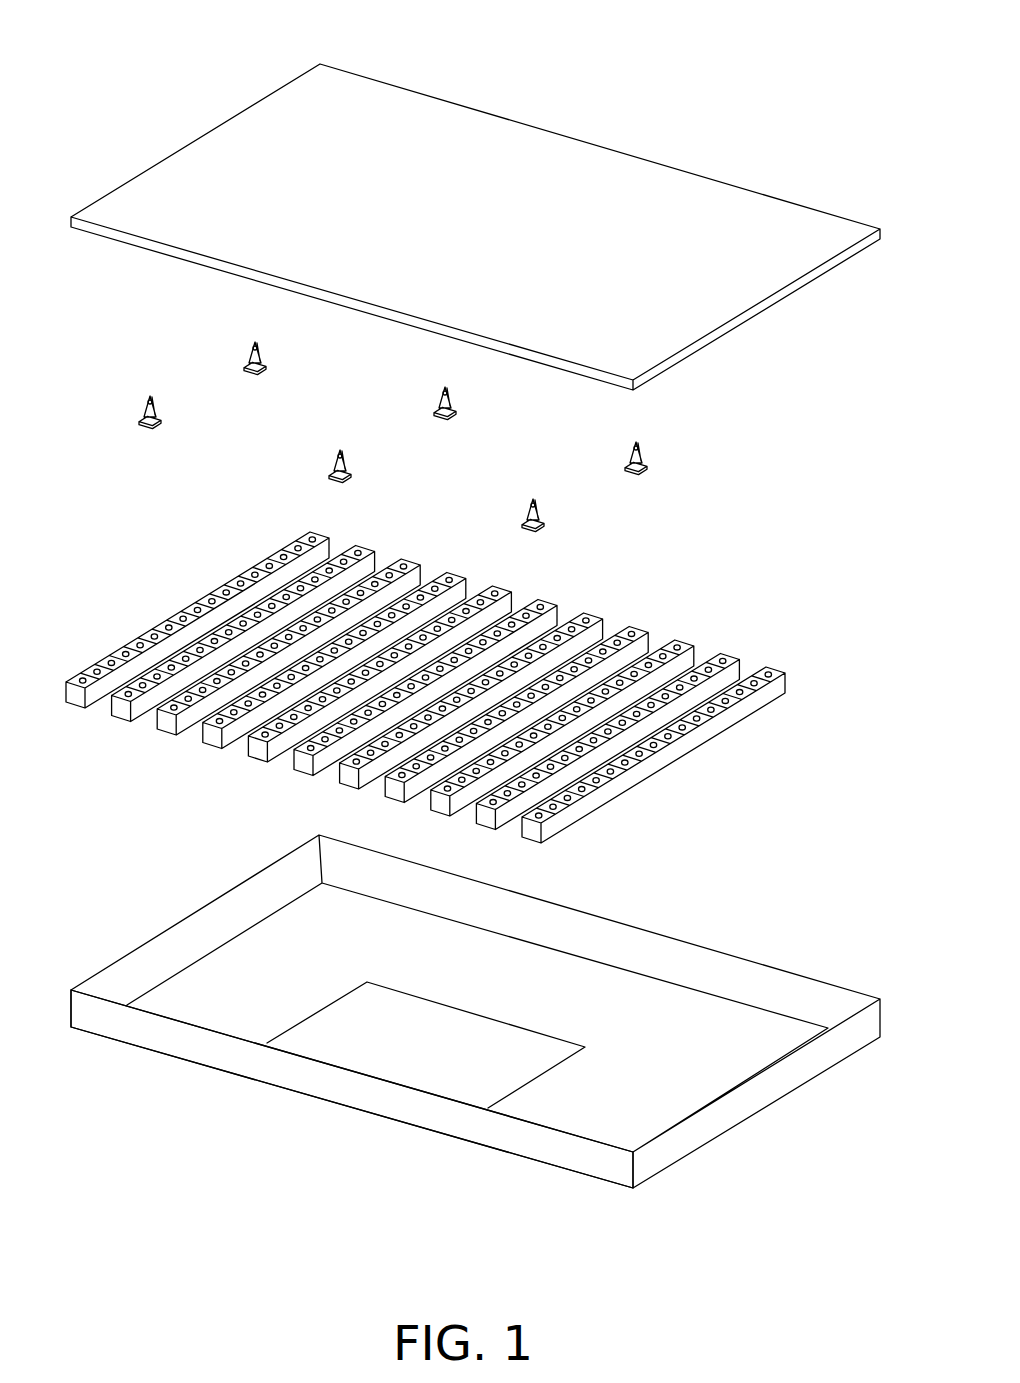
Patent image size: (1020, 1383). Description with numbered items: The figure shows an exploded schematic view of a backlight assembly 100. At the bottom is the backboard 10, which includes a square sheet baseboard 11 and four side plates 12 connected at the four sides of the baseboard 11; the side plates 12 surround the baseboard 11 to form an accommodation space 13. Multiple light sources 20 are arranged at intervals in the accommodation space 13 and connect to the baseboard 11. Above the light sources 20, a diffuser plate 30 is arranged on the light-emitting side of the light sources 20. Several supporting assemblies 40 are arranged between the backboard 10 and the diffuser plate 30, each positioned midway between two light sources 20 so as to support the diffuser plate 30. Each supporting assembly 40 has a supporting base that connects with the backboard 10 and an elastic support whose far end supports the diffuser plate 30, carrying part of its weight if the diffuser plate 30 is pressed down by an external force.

The backlight assembly 100 is at (498, 28).
The backboard 10 is at (475, 1049).
The baseboard 11 is at (667, 1107).
The side plates 12 is at (527, 1142).
The accommodation space 13 is at (623, 1008).
The light sources 20 is at (695, 737).
The diffuser plate 30 is at (713, 290).
The supporting assembly 40 is at (645, 452).